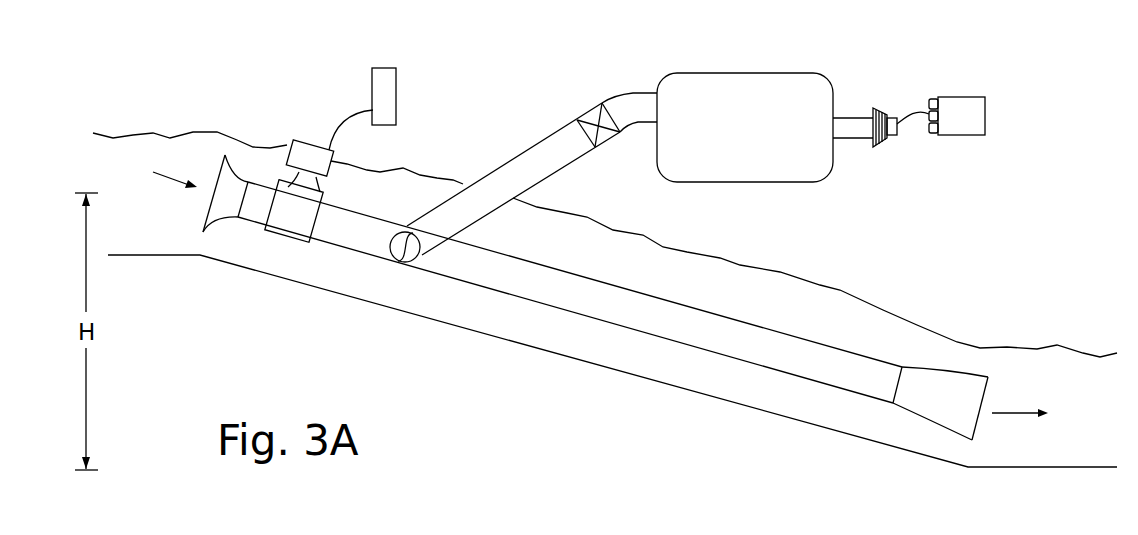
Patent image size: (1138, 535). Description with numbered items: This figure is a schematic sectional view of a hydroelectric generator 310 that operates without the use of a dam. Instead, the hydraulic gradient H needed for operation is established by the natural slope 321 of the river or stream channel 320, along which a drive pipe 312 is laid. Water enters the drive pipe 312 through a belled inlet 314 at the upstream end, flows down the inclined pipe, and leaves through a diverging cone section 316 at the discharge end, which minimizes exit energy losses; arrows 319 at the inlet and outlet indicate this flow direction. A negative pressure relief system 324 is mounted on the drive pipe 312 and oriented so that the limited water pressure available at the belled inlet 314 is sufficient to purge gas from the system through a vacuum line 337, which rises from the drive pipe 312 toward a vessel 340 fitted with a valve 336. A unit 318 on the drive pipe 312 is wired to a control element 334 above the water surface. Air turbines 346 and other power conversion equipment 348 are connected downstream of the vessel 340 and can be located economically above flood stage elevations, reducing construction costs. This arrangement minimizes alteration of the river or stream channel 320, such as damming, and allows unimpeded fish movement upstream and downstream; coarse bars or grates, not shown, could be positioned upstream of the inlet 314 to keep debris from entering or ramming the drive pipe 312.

The hydroelectric generator 310 is at (678, 376).
The drive pipe 312 is at (657, 307).
The belled inlet 314 is at (223, 213).
The diverging cone section 316 is at (958, 385).
The turbine generator 318 is at (290, 237).
The water flow direction 319 is at (170, 184).
The river or stream channel 320 is at (178, 118).
The natural slope 321 is at (470, 327).
The negative pressure relief system 324 is at (430, 262).
The controller 334 is at (396, 85).
The valve 336 is at (607, 133).
The vacuum line 337 is at (557, 165).
The storage tank 340 is at (833, 93).
The air turbines 346 is at (880, 147).
The other power conversion equipment 348 is at (985, 110).